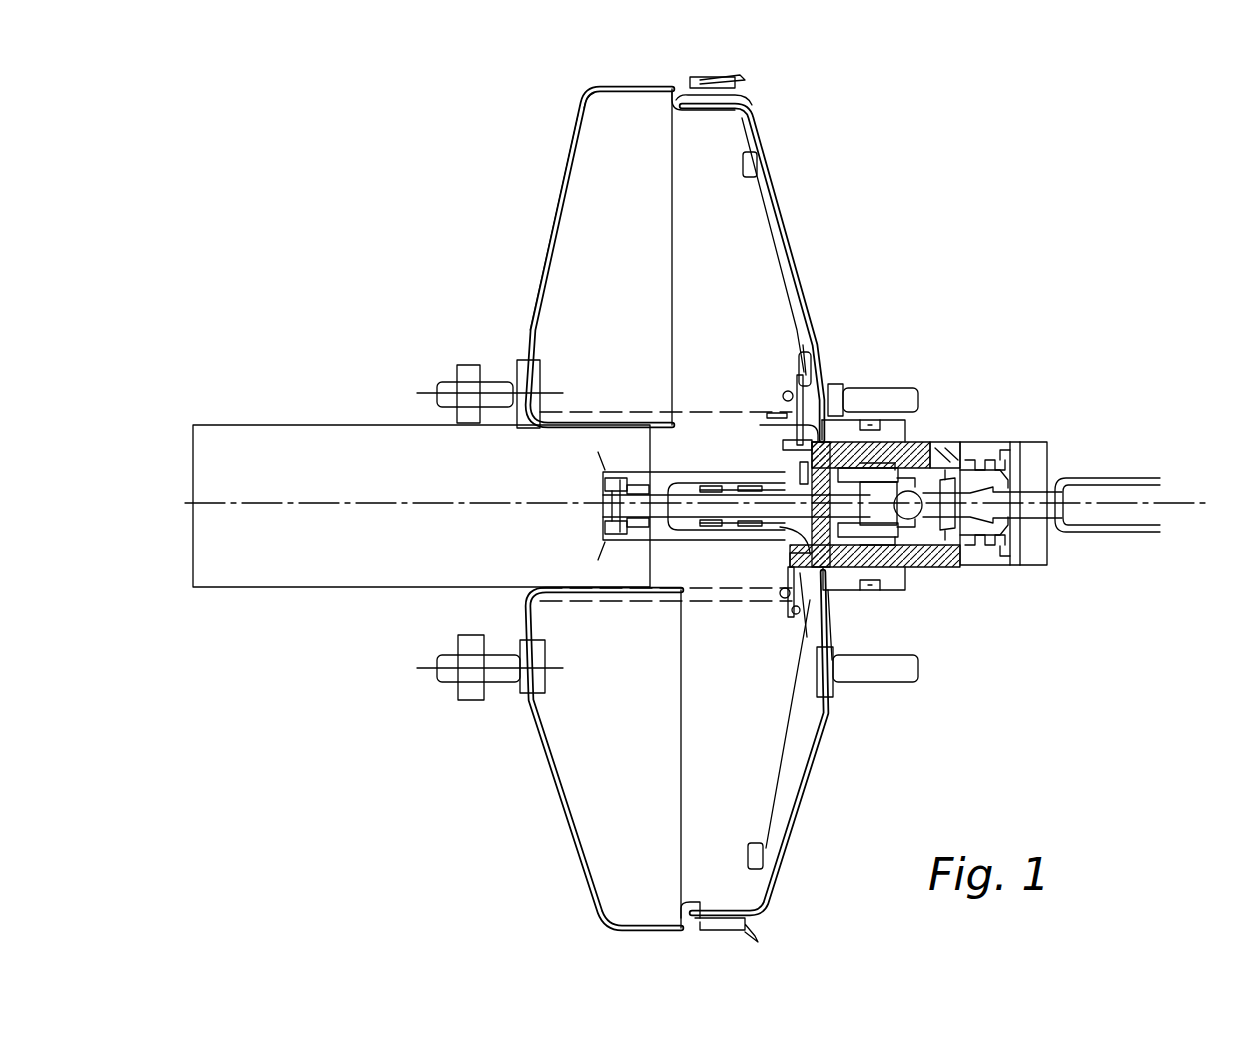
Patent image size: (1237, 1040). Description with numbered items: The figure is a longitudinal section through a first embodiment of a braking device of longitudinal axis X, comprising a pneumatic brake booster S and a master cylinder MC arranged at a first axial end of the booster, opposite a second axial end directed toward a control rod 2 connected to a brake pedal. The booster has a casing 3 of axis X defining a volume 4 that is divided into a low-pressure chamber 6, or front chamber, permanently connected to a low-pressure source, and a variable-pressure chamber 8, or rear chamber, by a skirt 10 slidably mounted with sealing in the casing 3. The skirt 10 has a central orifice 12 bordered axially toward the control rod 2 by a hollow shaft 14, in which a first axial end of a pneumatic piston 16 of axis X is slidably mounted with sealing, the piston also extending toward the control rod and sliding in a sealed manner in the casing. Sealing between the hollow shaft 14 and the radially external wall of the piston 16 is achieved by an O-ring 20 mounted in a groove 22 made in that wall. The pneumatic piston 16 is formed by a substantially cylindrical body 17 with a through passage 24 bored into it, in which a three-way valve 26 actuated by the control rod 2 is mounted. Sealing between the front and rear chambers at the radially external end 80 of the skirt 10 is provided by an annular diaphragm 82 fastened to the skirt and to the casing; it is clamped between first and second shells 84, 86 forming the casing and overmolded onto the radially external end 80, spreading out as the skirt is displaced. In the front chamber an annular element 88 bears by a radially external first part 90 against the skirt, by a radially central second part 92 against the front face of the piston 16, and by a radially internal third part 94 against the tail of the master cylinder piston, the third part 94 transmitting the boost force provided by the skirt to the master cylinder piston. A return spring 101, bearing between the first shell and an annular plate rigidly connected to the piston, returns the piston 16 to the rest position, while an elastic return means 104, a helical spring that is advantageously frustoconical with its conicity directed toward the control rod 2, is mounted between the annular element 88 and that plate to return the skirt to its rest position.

The control rod 2 is at (1050, 507).
The casing 3 is at (580, 118).
The volume 4 is at (693, 510).
The low-pressure chamber 6 is at (577, 190).
The variable-pressure chamber 8 is at (782, 192).
The skirt 10 is at (808, 303).
The central orifice 12 is at (824, 590).
The hollow shaft 14 is at (883, 424).
The pneumatic piston 16 is at (985, 426).
The cylindrical body 17 is at (943, 570).
The O-ring 20 is at (860, 432).
The groove 22 is at (868, 361).
The through passage 24 is at (1000, 567).
The three-way valve 26 is at (949, 444).
The radially external end 80 is at (762, 110).
The annular diaphragm 82 is at (742, 100).
The first shell 84 is at (588, 90).
The second shell 86 is at (762, 154).
The annular element 88 is at (793, 376).
The radially external first part 90 is at (800, 378).
The radially central second part 92 is at (796, 466).
The radially internal third part 94 is at (776, 572).
The return spring 101 is at (622, 600).
The elastic return means 104 is at (790, 400).
The master cylinder MC is at (380, 424).
The pneumatic brake booster S is at (805, 249).
The longitudinal axis X is at (1197, 503).